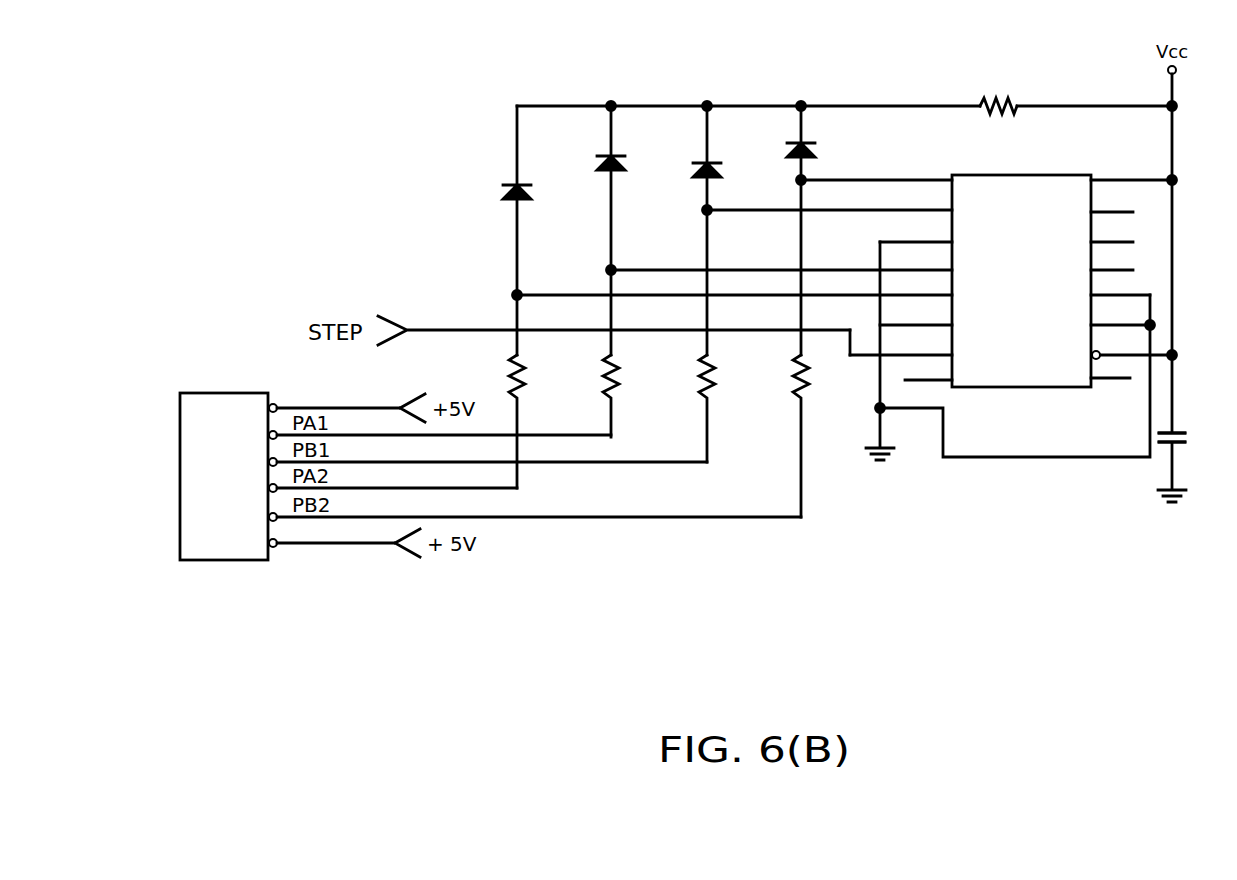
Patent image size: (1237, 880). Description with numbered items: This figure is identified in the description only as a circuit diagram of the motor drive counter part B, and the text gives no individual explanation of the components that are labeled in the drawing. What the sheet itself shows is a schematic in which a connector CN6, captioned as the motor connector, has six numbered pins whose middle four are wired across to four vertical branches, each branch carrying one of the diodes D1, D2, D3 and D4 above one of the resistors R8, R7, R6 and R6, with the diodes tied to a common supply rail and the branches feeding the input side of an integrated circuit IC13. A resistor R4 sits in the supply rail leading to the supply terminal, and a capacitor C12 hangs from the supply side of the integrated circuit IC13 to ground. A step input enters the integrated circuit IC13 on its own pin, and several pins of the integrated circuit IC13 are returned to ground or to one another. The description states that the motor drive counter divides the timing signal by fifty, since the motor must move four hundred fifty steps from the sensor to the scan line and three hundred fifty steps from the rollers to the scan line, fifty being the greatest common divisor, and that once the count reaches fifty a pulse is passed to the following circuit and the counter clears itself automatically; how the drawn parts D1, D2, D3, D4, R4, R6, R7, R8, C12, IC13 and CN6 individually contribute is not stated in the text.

The diode D1 is at (535, 230).
The diode D2 is at (629, 230).
The diode D3 is at (724, 230).
The diode D4 is at (820, 230).
The resistor R4 is at (998, 93).
The resistor R6 is at (769, 436).
The resistor R7 is at (626, 396).
The resistor R8 is at (532, 421).
The capacitor C12 is at (1195, 438).
The stepper motor driver IC IC13 is at (844, 268).
The motor connector CN6 is at (243, 478).